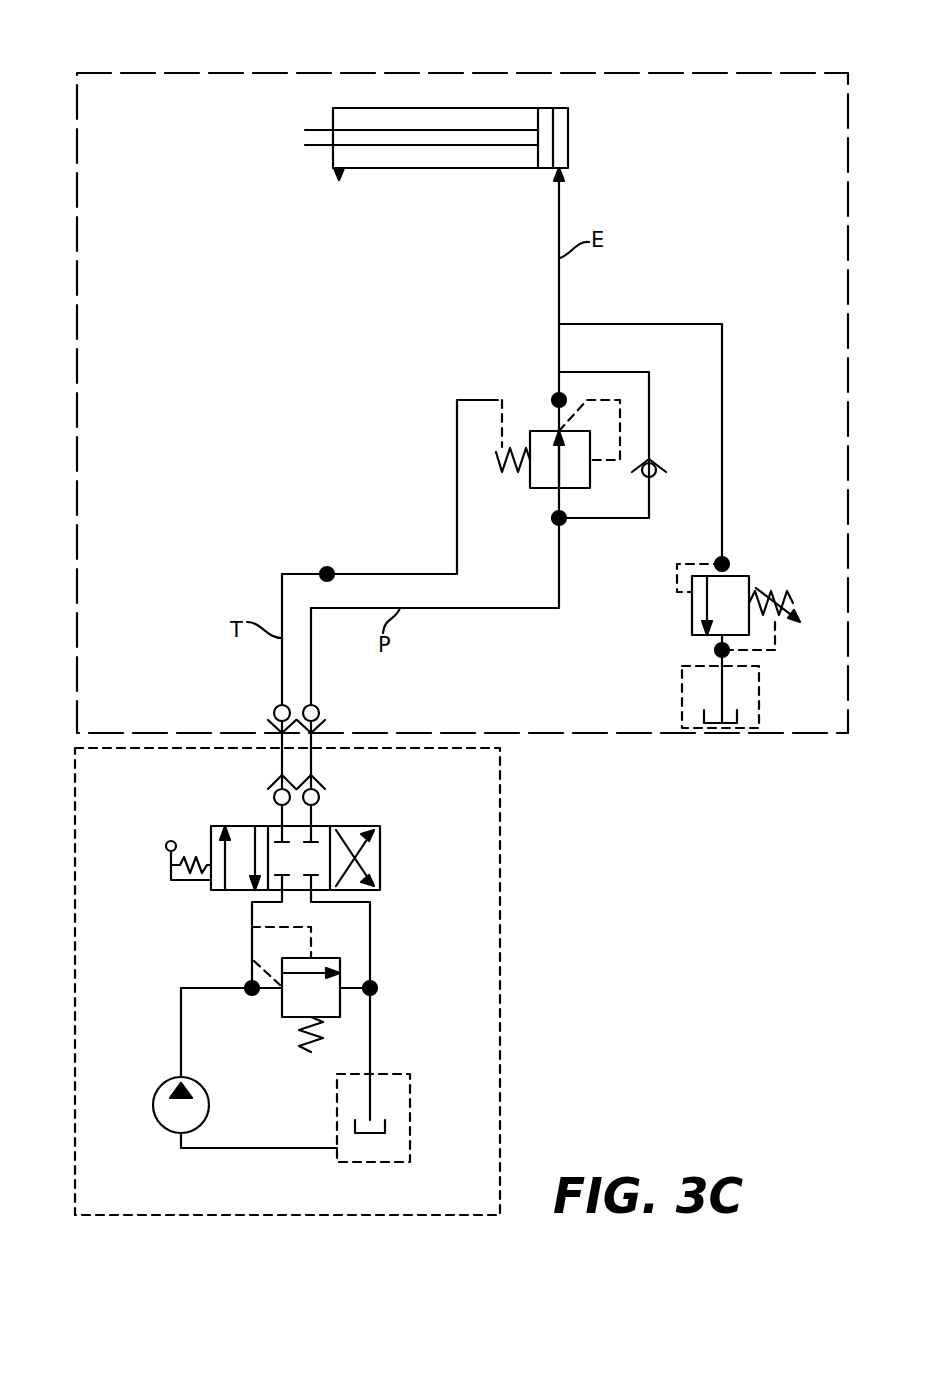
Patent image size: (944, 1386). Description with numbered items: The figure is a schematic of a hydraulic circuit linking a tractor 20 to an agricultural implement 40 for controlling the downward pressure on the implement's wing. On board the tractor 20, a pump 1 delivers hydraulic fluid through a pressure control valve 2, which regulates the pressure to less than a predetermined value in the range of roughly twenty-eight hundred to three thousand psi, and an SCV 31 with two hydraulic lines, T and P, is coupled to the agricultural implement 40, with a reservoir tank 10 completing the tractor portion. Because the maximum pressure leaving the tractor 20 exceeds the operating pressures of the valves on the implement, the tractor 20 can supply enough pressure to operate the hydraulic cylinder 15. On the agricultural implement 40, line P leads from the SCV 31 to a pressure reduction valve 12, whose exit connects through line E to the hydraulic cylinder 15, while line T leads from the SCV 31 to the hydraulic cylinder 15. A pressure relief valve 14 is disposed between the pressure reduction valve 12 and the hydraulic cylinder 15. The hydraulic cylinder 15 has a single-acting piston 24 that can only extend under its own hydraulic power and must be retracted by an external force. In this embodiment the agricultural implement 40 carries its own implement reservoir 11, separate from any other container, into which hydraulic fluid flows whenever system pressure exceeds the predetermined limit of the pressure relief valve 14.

The agricultural implement 40 is at (462, 383).
The hydraulic cylinder 15 is at (436, 170).
The single-acting piston 24 is at (576, 138).
The pressure reduction valve 12 is at (451, 471).
The pressure relief valve 14 is at (719, 607).
The implement reservoir 11 is at (703, 689).
The tractor 20 is at (264, 981).
The SCV 31 is at (273, 889).
The pressure control valve 2 is at (293, 989).
The pump 1 is at (226, 1075).
The reservoir tank 10 is at (410, 1118).